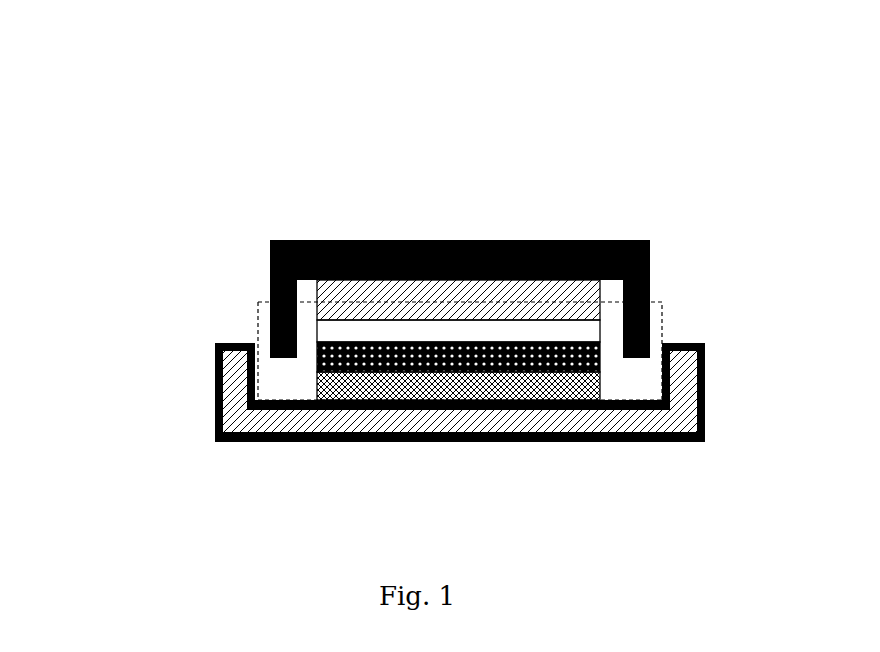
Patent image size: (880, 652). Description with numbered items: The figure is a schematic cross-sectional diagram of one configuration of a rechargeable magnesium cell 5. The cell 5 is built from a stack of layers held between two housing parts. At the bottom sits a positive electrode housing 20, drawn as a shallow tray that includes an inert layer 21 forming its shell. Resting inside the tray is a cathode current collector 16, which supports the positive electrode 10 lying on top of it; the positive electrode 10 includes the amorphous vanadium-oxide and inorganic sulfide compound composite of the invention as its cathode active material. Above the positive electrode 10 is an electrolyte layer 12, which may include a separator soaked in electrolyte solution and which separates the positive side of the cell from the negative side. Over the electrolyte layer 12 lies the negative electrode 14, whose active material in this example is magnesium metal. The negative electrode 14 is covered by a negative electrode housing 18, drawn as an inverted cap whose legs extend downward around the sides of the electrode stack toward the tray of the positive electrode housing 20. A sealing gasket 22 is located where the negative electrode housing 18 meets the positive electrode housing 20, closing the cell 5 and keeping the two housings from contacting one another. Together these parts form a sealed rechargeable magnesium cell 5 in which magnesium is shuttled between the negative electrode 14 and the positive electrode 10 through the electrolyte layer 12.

The rechargeable magnesium cell 5 is at (396, 264).
The positive electrode 10 is at (607, 353).
The electrolyte layer 12 is at (323, 327).
The negative electrode 14 is at (573, 305).
The cathode current collector 16 is at (313, 392).
The negative electrode housing 18 is at (445, 238).
The positive electrode housing 20 is at (373, 429).
The inert layer 21 is at (220, 445).
The sealing gasket 22 is at (638, 370).